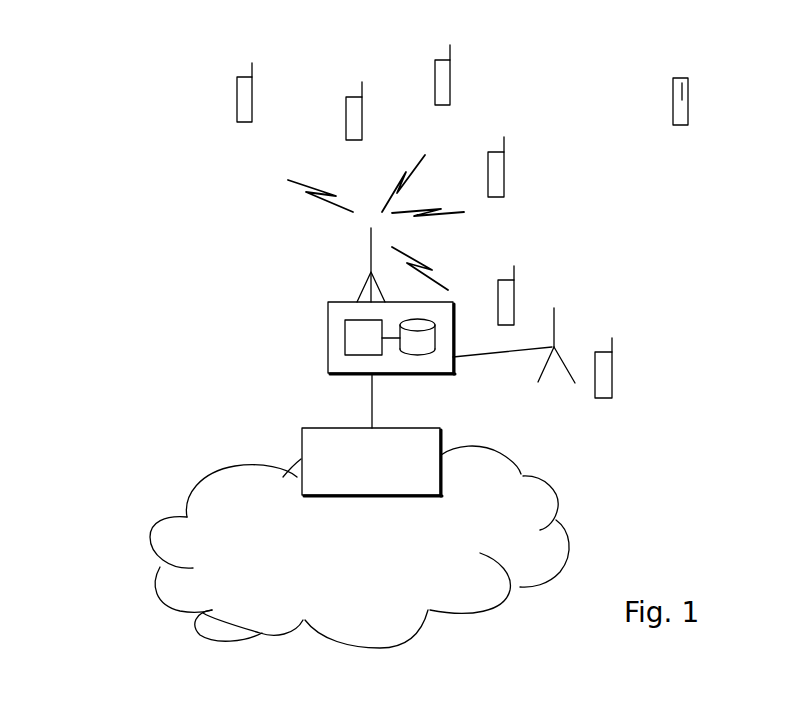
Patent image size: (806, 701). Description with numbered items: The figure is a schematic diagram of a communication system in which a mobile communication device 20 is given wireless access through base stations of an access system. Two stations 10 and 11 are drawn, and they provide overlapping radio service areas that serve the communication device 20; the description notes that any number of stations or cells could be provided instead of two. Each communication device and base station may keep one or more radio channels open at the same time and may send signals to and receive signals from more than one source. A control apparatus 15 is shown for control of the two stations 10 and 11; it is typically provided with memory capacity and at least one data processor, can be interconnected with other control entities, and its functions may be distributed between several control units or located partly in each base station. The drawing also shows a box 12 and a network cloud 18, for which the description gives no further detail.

The station 10 is at (365, 265).
The control apparatus 15 is at (328, 339).
The gateway / network interface 12 is at (302, 443).
The communication network cloud 18 is at (212, 498).
The communication device 20 is at (505, 178).
The station 11 is at (563, 332).